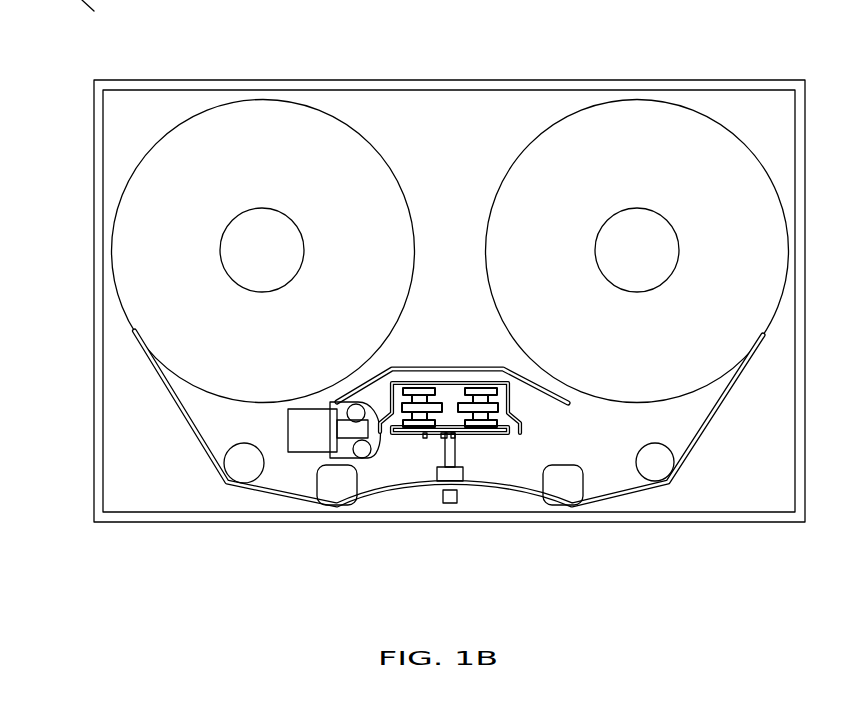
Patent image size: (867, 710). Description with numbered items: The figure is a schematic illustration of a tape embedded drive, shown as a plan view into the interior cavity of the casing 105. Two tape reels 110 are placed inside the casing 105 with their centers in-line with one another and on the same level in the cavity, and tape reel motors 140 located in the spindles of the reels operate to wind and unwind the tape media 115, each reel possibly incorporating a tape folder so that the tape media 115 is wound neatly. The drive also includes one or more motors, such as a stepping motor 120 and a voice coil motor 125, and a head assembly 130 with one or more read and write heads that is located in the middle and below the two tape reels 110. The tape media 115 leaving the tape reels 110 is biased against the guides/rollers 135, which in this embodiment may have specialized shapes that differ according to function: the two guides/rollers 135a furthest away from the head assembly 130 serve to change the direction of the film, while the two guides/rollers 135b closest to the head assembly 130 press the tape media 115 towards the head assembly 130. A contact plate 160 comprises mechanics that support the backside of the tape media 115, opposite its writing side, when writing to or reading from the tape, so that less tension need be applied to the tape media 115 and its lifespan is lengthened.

The casing 105 is at (480, 80).
The tape reels 110 is at (248, 100).
The tape reel motors 140 is at (293, 218).
The tape media 115 is at (192, 427).
The stepping motor 120 is at (300, 452).
The voice coil motor 125 is at (428, 438).
The head assembly 130 is at (462, 497).
The guides/rollers 135 is at (243, 465).
The guides/rollers 135a is at (660, 468).
The guides/rollers 135b is at (338, 492).
The contact plate 160 is at (435, 493).